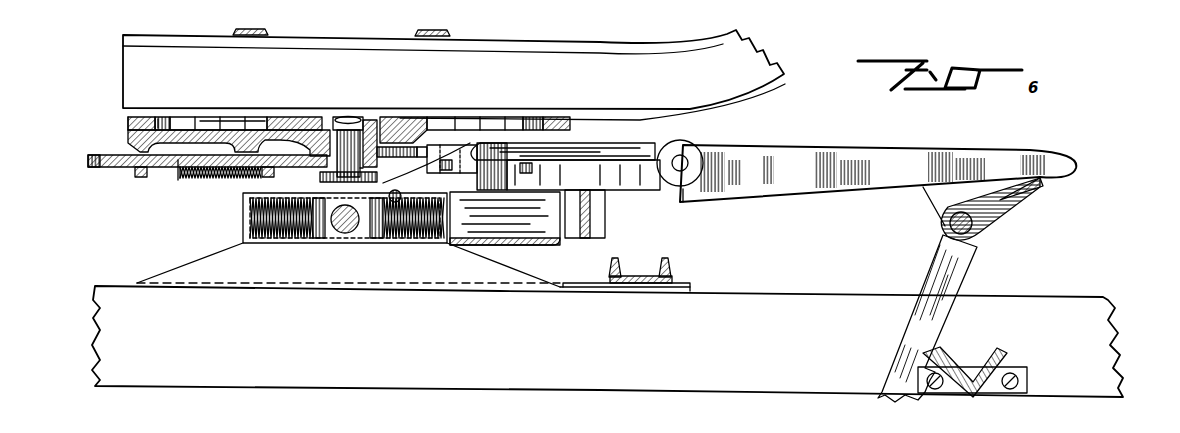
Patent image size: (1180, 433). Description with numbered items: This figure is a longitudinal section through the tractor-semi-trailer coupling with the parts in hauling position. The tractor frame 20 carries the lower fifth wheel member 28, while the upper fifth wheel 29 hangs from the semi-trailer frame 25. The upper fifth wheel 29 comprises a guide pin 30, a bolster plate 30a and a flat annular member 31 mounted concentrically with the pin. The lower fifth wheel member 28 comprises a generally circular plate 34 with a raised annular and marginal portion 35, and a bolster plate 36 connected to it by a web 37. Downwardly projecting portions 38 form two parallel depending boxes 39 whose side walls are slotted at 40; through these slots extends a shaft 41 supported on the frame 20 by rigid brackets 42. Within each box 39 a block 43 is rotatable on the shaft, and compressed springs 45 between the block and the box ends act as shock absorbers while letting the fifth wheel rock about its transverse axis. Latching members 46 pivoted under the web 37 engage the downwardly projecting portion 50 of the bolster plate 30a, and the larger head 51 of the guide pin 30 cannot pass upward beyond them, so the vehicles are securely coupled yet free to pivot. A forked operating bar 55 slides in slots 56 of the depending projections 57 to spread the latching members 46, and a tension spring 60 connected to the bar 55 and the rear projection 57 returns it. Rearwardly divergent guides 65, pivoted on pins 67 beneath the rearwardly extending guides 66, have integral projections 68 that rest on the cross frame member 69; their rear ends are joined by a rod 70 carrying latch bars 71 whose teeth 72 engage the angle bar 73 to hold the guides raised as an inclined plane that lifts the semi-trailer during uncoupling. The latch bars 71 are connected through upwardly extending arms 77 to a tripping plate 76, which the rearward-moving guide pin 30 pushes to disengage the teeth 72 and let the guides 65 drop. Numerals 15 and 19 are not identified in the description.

The carriage block 15 is at (457, 192).
The screw 19 is at (389, 194).
The frame 20 is at (690, 328).
The frame 25 is at (743, 83).
The lower fifth wheel member 28 is at (130, 132).
The upper fifth wheel 29 is at (128, 117).
The guide pin 30 is at (345, 160).
The bolster plate 30a is at (405, 120).
The annular member 31 is at (140, 118).
The circular plate 34 is at (163, 122).
The raised annular and marginal portion 35 is at (225, 132).
The bolster plate 36 is at (297, 130).
The web 37 is at (203, 125).
The downwardly projecting portions 38 is at (243, 220).
The depending boxes 39 is at (296, 243).
The slots 40 is at (375, 243).
The shaft 41 is at (346, 233).
The brackets 42 is at (506, 290).
The block 43 is at (333, 240).
The compressed springs 45 is at (266, 243).
The latching members 46 is at (390, 147).
The downwardly projecting portion 50 is at (340, 117).
The head 51 is at (350, 178).
The forked operating bar 55 is at (90, 165).
The slots 56 is at (130, 157).
The depending projections 57 is at (140, 178).
The tension spring 60 is at (214, 180).
The rearwardly divergent guides 65 is at (804, 154).
The rearwardly extending guides 66 is at (620, 143).
The pins 67 is at (690, 160).
The downwardly extending integral projections 68 is at (595, 230).
The cross frame member 69 is at (634, 275).
The rod 70 is at (947, 224).
The latch bars 71 is at (928, 298).
The teeth 72 is at (918, 378).
The angle bar 73 is at (985, 352).
The tripping plate 76 is at (1015, 199).
The upwardly extending arms 77 is at (997, 228).